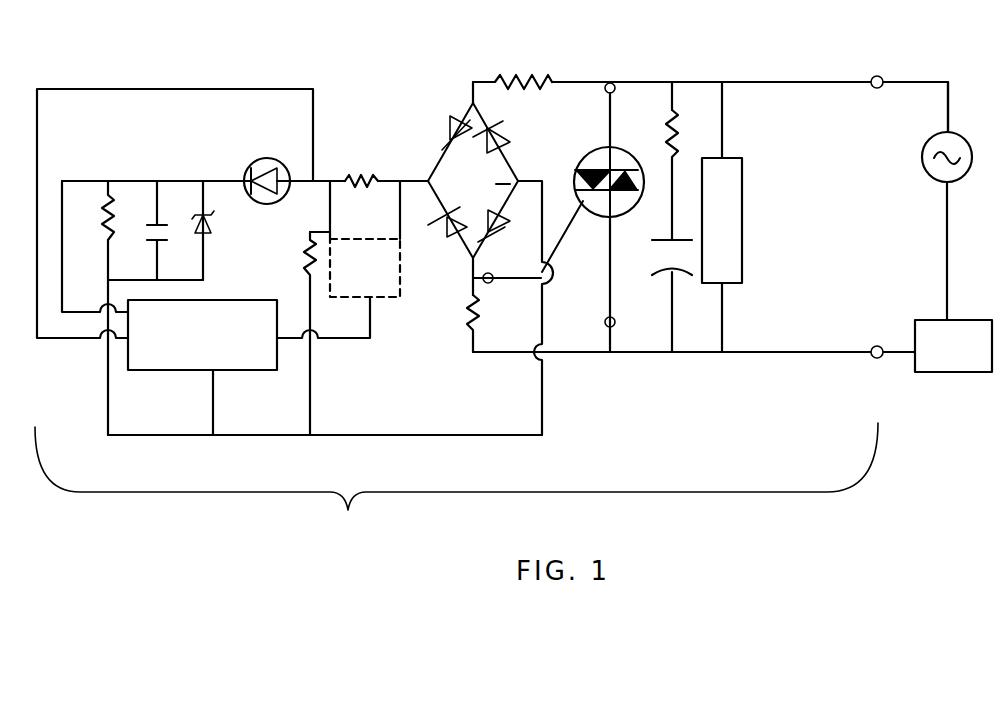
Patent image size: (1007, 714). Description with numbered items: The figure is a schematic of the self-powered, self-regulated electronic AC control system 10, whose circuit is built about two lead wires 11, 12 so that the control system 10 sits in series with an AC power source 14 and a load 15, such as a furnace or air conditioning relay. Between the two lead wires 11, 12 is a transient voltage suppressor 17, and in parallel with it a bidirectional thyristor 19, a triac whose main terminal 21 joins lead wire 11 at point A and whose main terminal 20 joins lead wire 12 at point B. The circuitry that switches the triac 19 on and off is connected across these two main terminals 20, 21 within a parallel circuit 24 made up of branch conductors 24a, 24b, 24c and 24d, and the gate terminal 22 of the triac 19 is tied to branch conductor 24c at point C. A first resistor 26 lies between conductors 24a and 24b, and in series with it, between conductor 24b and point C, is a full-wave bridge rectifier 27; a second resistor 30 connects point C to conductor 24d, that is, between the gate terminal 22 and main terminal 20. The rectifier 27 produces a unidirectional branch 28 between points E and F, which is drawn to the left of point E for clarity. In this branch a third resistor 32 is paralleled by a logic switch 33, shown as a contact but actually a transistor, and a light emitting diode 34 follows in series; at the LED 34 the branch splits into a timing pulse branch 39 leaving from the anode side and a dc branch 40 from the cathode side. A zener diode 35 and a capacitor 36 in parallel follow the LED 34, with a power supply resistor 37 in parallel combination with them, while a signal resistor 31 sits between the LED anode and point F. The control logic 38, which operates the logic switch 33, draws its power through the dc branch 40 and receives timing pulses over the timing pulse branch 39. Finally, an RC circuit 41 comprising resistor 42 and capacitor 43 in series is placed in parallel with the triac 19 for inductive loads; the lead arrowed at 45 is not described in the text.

The control system 10 is at (348, 510).
The lead wire 11 is at (757, 82).
The lead wire 12 is at (794, 355).
The AC power source 14 is at (965, 142).
The load 15 is at (953, 346).
The transient voltage suppressor 17 is at (722, 217).
The bidirectional thyristor 19 is at (627, 140).
The main terminal 20 is at (604, 323).
The main terminal 21 is at (604, 91).
The gate terminal 22 is at (495, 271).
The parallel circuit 24 is at (456, 95).
The branch conductor 24a is at (587, 82).
The branch conductor 24b is at (475, 81).
The branch conductor 24c is at (471, 262).
The branch conductor 24d is at (547, 357).
The first resistor 26 is at (533, 75).
The full-wave bridge rectifier 27 is at (434, 140).
The unidirectional branch 28 is at (326, 170).
The second resistor 30 is at (468, 310).
The signal resistor 31 is at (300, 260).
The third resistor 32 is at (357, 177).
The logic switch 33 is at (360, 238).
The light emitting diode 34 is at (257, 159).
The zener diode 35 is at (208, 218).
The capacitor 36 is at (150, 240).
The power supply resistor 37 is at (104, 195).
The control logic 38 is at (325, 367).
The timing pulse branch 39 is at (130, 89).
The dc branch 40 is at (185, 180).
The RC circuit 41 is at (684, 105).
The resistor 42 is at (679, 142).
The capacitor 43 is at (660, 273).
The lead 45 is at (934, 110).